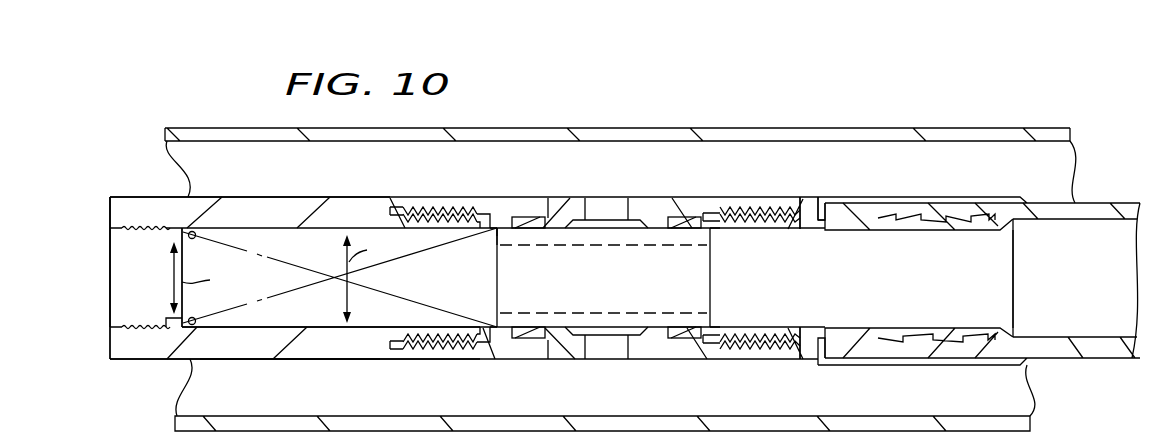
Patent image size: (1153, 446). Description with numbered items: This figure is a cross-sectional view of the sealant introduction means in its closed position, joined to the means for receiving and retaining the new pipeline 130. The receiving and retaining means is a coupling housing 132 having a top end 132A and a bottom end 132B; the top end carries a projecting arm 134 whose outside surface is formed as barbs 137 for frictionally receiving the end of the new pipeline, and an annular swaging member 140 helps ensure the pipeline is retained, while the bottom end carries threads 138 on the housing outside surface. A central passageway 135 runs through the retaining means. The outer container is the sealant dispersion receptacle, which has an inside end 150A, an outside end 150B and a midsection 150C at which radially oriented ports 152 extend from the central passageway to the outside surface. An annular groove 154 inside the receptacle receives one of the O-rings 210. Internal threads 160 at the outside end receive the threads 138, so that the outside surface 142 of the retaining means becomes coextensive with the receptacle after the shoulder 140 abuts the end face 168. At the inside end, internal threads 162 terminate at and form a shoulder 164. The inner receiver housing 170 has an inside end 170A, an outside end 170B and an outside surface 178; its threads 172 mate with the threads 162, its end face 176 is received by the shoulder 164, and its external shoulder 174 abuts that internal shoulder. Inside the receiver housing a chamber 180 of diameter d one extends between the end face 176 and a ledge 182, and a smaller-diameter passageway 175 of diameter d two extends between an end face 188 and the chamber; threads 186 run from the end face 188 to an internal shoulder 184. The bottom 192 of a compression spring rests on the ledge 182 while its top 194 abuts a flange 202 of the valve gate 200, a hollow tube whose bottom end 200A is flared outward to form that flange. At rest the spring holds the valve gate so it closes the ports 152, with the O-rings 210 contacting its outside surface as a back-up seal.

The receiving and retaining means 130 is at (915, 174).
The coupling housing 132 is at (818, 214).
The top end 132A is at (721, 240).
The bottom end 132B is at (820, 240).
The projecting arm 134 is at (860, 225).
The central passageway 135 is at (975, 281).
The barbs 137 is at (963, 333).
The threads 138 is at (733, 277).
The annular swaging member 140 is at (798, 213).
The outside surface 142 is at (811, 369).
The inside end 150A is at (472, 172).
The outside end 150B is at (794, 176).
The midsection 150C is at (636, 176).
The radially oriented ports 152 is at (618, 370).
The annular groove 154 is at (545, 222).
The internal threads 160 is at (722, 207).
The internal threads 162 is at (400, 207).
The shoulder 164 is at (490, 340).
The end face 168 is at (800, 334).
The inner receiver housing 170 is at (272, 224).
The inside end 170A is at (444, 370).
The outside end 170B is at (108, 370).
The threads 172 is at (430, 208).
The external shoulder 174 is at (390, 332).
The passageway 175 is at (150, 282).
The end face 176 is at (500, 229).
The outside surface 178 is at (296, 368).
The chamber 180 is at (440, 290).
The ledge 182 is at (193, 325).
The internal shoulder 184 is at (166, 327).
The threads 186 is at (165, 231).
The end face 188 is at (110, 215).
The bottom of spring 192 is at (190, 232).
The top of spring 194 is at (497, 233).
The valve gate 200 is at (692, 278).
The bottom end 200A is at (498, 300).
The flange 202 is at (504, 232).
The O-rings 210 is at (530, 340).